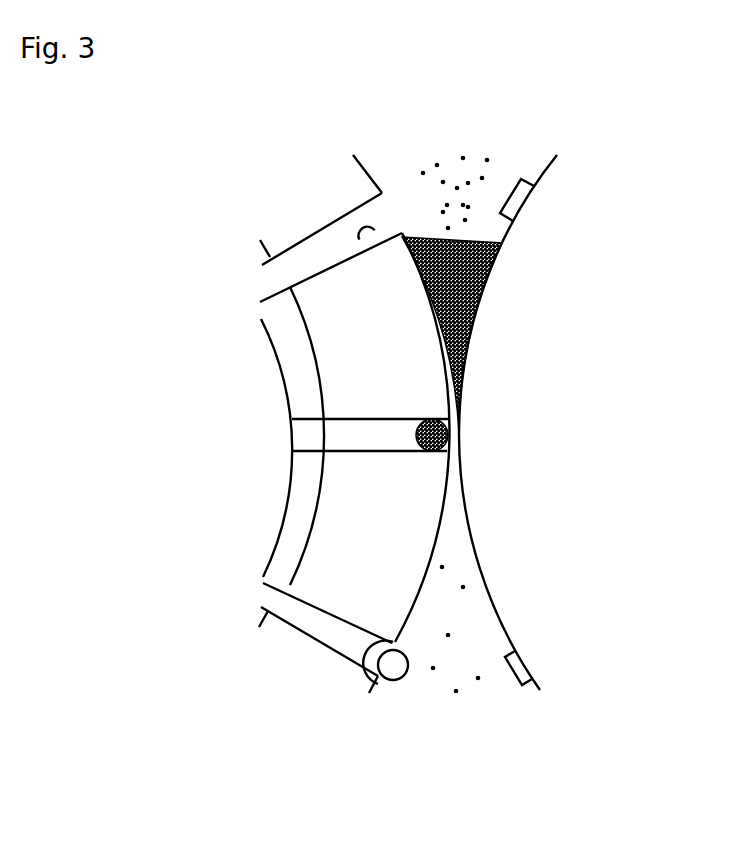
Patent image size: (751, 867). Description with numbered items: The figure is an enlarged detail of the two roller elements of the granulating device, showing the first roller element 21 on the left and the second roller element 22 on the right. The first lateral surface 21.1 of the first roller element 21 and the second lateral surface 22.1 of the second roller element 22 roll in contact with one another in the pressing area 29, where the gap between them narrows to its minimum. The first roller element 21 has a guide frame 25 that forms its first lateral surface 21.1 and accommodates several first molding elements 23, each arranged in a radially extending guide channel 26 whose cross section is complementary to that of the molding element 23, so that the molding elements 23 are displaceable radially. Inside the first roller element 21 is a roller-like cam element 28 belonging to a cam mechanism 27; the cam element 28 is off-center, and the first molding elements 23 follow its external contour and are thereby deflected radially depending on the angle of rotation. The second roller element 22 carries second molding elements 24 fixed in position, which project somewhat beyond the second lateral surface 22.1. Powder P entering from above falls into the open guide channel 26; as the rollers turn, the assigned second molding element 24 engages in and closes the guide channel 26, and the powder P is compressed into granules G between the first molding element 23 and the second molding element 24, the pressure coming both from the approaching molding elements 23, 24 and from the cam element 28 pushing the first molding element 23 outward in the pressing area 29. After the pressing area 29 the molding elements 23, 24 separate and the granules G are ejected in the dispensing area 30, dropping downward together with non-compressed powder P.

The first roller element 21 is at (288, 176).
The first lateral surface 21.1 is at (442, 548).
The second roller element 22 is at (588, 390).
The second lateral surface 22.1 is at (467, 558).
The first molding element 23 is at (295, 263).
The second molding element 24 is at (527, 193).
The guide frame 25 is at (386, 564).
The guide channel 26 is at (343, 217).
The cam mechanism 27 is at (222, 352).
The cam element 28 is at (226, 447).
The pressing area 29 is at (496, 441).
The dispensing area 30 is at (380, 730).
The powder P is at (425, 152).
The granules G is at (393, 681).